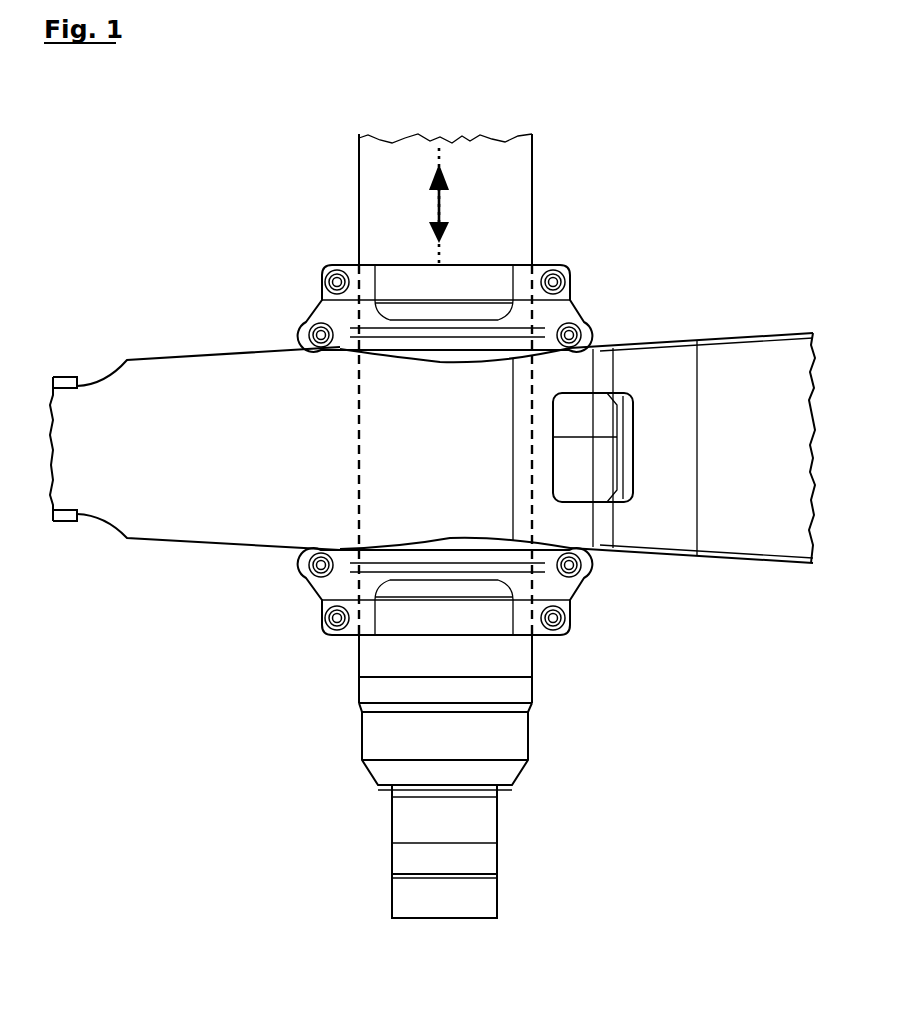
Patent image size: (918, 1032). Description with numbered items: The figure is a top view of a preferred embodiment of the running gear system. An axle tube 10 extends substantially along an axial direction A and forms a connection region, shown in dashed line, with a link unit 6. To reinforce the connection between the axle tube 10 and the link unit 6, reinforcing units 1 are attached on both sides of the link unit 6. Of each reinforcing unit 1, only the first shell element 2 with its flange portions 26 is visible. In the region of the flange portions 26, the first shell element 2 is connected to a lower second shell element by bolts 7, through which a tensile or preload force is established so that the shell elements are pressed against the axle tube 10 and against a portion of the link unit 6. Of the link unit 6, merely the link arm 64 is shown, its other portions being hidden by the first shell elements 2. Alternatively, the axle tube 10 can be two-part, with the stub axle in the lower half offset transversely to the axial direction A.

The reinforcing unit 1 is at (588, 296).
The first shell element 2 is at (408, 275).
The link unit 6 is at (649, 352).
The bolt 7 is at (583, 570).
The axle tube 10 is at (521, 238).
The flange portion 26 is at (335, 307).
The link arm 64 is at (203, 518).
The axial direction A is at (441, 207).